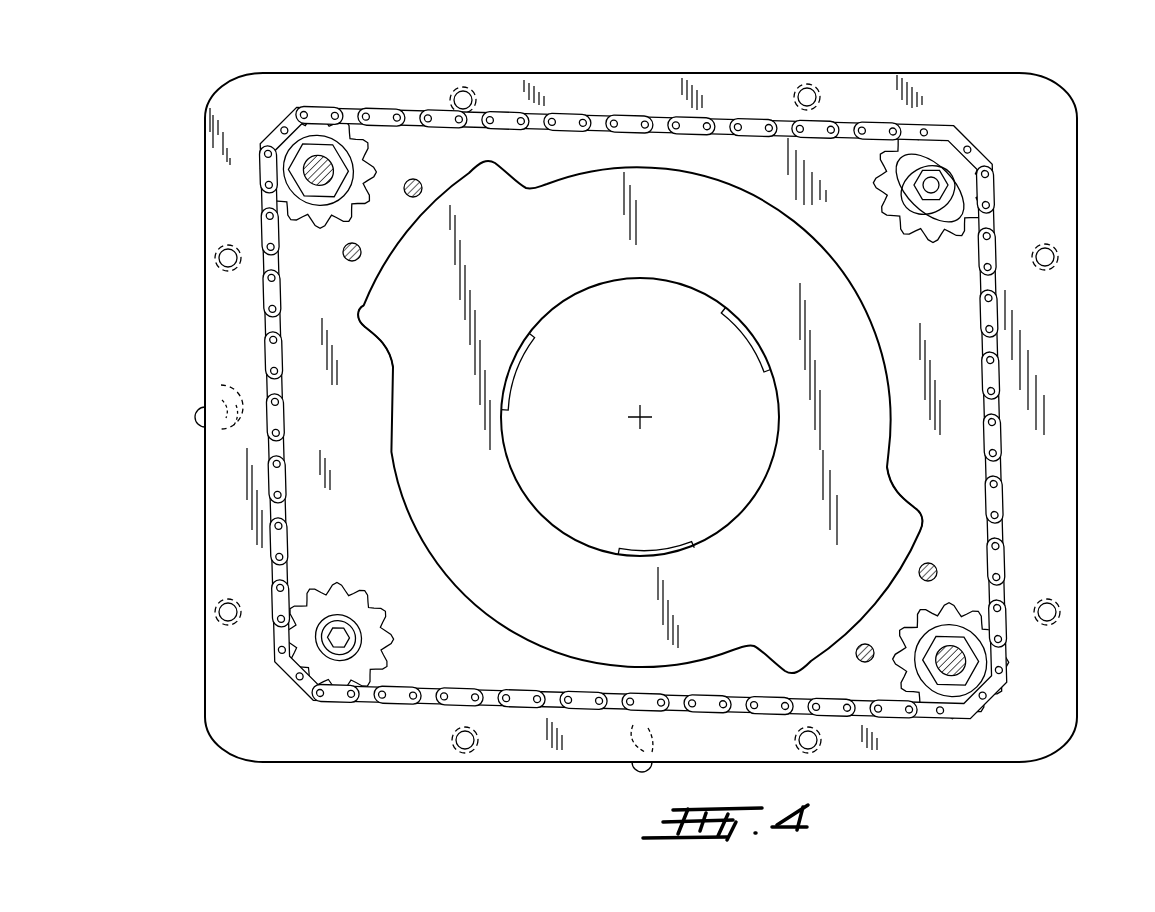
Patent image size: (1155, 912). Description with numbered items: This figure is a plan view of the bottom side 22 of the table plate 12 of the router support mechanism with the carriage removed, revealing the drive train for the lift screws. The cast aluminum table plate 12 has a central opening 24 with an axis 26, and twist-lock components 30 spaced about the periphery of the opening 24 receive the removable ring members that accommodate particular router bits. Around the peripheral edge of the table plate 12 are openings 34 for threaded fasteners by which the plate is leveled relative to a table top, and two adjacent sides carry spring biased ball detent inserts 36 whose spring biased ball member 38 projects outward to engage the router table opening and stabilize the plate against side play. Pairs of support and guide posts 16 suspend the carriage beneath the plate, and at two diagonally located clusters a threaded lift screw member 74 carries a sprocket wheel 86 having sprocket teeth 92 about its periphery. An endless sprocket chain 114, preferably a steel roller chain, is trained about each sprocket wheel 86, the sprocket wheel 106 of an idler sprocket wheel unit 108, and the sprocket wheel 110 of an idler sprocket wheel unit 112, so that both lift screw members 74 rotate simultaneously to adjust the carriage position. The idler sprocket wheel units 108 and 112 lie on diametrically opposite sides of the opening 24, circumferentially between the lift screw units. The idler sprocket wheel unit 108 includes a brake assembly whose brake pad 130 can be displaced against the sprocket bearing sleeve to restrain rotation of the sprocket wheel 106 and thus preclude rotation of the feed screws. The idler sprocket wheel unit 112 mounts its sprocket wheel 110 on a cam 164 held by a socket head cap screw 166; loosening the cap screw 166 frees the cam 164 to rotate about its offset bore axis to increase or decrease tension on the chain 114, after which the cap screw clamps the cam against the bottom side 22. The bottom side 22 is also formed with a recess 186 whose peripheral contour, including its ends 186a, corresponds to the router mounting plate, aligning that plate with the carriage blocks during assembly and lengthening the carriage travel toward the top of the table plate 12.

The table plate 12 is at (668, 74).
The support and guide posts 16 is at (410, 197).
The bottom side 22 is at (1052, 380).
The opening 24 is at (777, 448).
The axis 26 is at (641, 415).
The twist-lock components 30 is at (750, 354).
The openings 34 is at (466, 91).
The spring biased ball detent inserts 36 is at (212, 380).
The spring biased ball member 38 is at (198, 425).
The lift screw member 74 is at (320, 165).
The sprocket wheel 86 is at (325, 227).
The sprocket teeth 92 is at (366, 172).
The sprocket wheel 106 is at (952, 160).
The idler sprocket wheel unit 108 is at (885, 232).
The sprocket wheel 110 is at (367, 613).
The idler sprocket wheel unit 112 is at (345, 578).
The endless sprocket chain 114 is at (1008, 507).
The brake pad 130 is at (933, 217).
The cam 164 is at (353, 650).
The socket head cap screw 166 is at (354, 633).
The recess 186 is at (760, 268).
The ends 186a is at (897, 532).